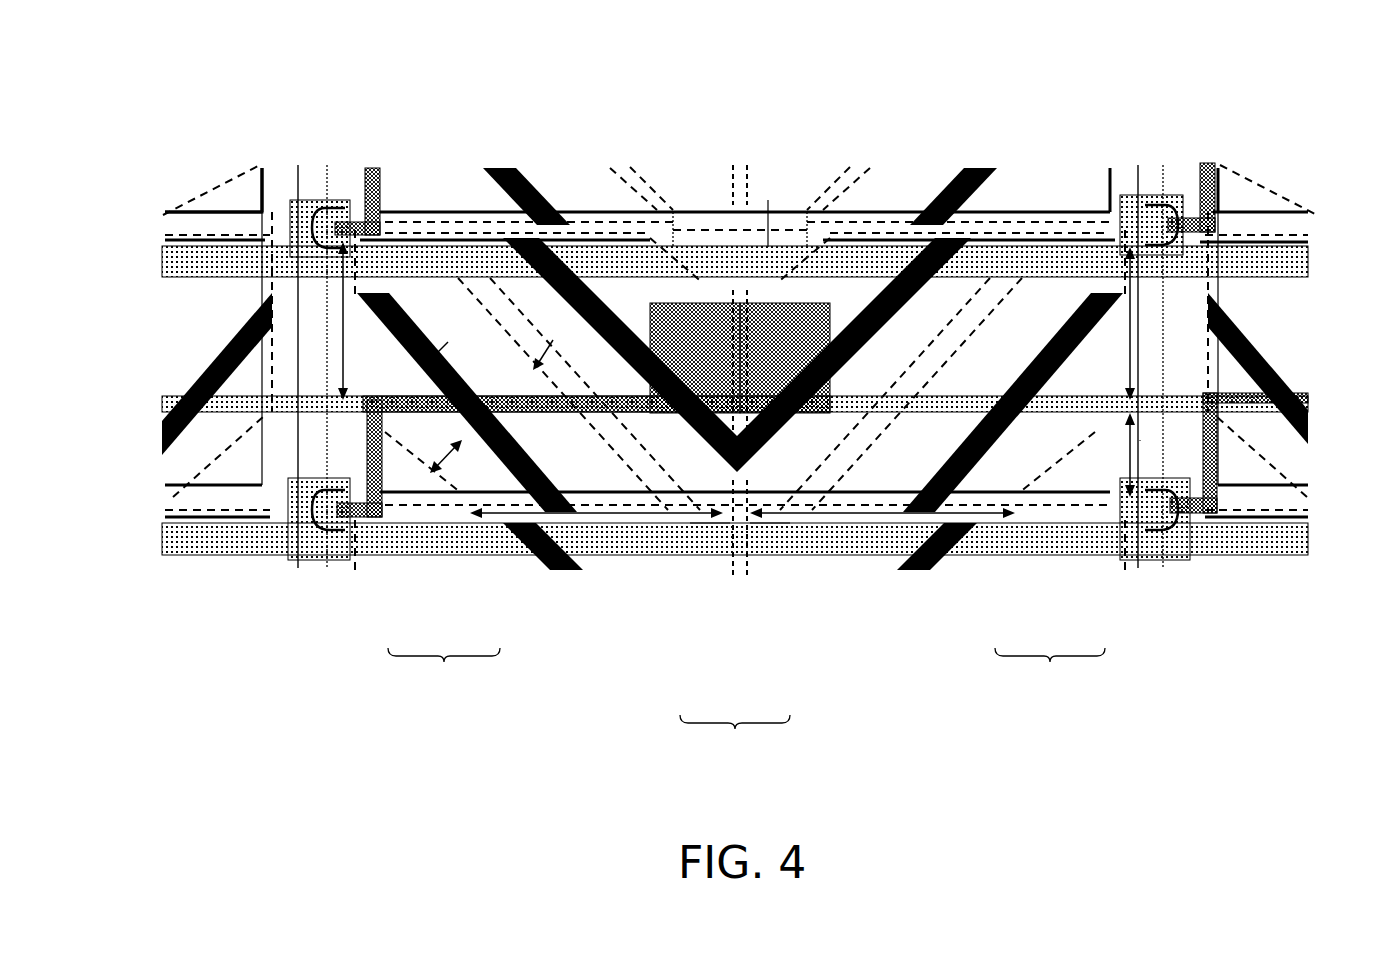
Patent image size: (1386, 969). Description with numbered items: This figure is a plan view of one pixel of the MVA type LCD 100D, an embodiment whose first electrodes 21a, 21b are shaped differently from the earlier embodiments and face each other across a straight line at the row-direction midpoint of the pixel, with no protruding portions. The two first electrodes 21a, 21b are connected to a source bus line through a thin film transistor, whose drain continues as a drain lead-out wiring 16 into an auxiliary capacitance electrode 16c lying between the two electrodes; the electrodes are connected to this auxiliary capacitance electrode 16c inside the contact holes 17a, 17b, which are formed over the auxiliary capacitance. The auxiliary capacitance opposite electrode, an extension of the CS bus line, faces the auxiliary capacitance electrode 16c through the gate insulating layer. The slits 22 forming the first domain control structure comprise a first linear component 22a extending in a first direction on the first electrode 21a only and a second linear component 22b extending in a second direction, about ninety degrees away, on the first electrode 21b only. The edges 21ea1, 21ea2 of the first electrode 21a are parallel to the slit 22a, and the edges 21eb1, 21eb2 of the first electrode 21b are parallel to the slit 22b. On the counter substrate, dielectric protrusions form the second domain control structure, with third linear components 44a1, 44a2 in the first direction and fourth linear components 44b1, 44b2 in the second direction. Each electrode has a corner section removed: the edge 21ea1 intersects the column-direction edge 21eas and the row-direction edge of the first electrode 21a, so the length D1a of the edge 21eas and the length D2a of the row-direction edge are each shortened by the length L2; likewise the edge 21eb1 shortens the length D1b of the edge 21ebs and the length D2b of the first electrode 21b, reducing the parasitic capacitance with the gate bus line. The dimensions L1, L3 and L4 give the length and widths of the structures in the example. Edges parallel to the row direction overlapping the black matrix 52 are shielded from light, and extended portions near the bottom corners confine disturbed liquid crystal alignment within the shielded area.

The LCD 100D is at (1238, 122).
The black matrix 52 is at (270, 170).
The first electrode 21a is at (432, 170).
The first electrode 21b is at (1050, 170).
The drain lead-out wiring 16 is at (500, 395).
The auxiliary capacitance electrode 16c is at (768, 200).
The contact hole 17a is at (655, 300).
The contact hole 17b is at (838, 300).
The edge of first electrode 21ea2 is at (673, 213).
The edge of first electrode 21eb2 is at (807, 213).
The edge of first electrode 21eas is at (345, 355).
The edge of first electrode 21ebs is at (1137, 355).
The edge of first electrode 21ea1 is at (383, 448).
The edge of first electrode 21eb1 is at (1203, 523).
The slits 22 is at (735, 734).
The first linear component 22a is at (655, 565).
The second linear component 22b is at (830, 565).
The third linear component 44a1 is at (445, 445).
The third linear component 44a2 is at (500, 420).
The fourth linear component 44b1 is at (930, 287).
The fourth linear component 44b2 is at (965, 365).
The length of column-direction edge D1a is at (345, 306).
The length of column-direction edge D1b is at (1137, 312).
The length of row-direction edge D2a is at (590, 556).
The length of row-direction edge D2b is at (890, 556).
The length L1 is at (445, 456).
The length L2 is at (1140, 440).
The width L3 is at (430, 345).
The width L4 is at (545, 345).